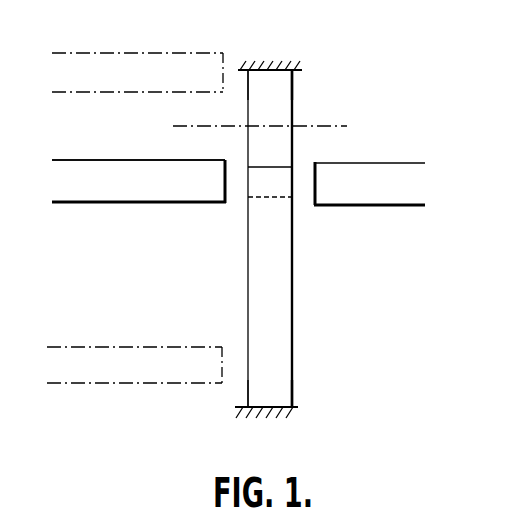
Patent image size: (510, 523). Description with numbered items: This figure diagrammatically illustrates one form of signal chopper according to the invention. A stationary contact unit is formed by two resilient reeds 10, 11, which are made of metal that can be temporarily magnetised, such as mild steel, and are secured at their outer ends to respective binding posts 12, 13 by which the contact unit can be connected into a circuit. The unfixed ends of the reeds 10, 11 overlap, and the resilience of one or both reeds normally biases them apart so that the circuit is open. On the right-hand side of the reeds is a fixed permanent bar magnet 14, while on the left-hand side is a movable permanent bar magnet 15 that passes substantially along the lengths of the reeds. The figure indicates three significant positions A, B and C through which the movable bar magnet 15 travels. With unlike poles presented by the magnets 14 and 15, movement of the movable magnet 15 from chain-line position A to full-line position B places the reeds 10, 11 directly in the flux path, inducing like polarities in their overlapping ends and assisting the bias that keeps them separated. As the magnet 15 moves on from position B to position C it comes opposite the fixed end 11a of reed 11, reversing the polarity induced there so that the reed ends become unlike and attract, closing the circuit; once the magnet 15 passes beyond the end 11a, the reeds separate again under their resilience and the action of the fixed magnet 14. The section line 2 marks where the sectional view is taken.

The section line 2— 2 is at (204, 114).
The resilient reed 10 is at (259, 98).
The resilient reed 11 is at (267, 272).
The fixed end of reed 11a is at (268, 392).
The binding post 12 is at (285, 63).
The binding post 13 is at (258, 412).
The fixed permanent bar magnet 14 is at (383, 185).
The movable permanent bar magnet 15 is at (153, 180).
The position A is at (127, 72).
The position B is at (128, 177).
The position C is at (120, 365).